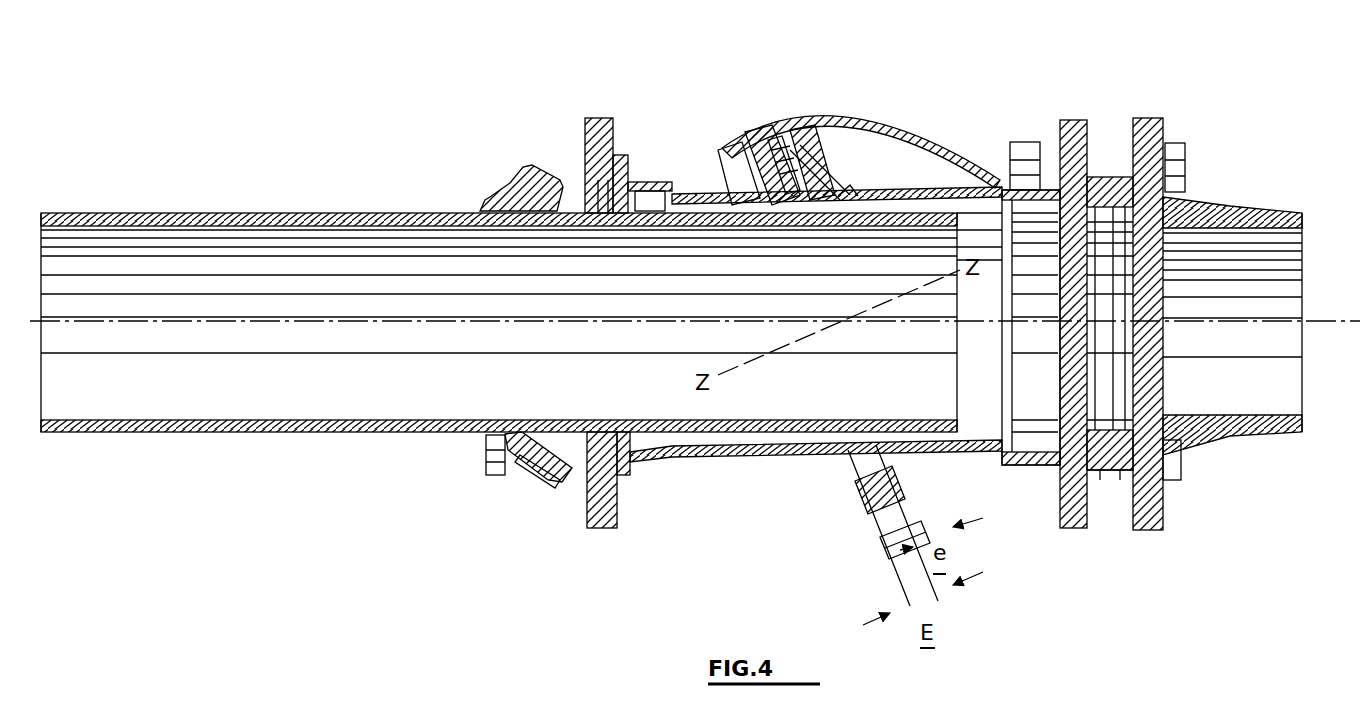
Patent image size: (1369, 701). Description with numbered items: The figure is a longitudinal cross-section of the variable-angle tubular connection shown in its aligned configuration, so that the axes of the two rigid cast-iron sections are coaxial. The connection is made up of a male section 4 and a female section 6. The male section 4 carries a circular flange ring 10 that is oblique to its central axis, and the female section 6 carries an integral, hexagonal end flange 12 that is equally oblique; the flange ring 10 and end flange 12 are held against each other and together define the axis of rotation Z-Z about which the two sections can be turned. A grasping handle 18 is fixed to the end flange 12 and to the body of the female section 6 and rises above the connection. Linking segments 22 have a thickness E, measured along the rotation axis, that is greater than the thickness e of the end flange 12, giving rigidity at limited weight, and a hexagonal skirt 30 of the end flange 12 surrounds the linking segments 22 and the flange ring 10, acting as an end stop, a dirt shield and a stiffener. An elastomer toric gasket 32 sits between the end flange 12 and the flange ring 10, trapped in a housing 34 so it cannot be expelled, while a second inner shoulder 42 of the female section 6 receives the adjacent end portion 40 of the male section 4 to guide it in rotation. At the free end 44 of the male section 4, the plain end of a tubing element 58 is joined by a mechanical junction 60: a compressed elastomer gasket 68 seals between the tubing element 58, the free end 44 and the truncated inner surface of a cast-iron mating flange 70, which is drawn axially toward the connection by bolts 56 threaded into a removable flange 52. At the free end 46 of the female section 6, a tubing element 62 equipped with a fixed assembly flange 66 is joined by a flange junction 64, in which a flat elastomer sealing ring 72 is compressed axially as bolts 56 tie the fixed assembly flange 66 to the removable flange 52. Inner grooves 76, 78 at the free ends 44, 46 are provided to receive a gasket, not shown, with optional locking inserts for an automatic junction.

The male section 4 is at (757, 460).
The female section 6 is at (937, 196).
The flange ring 10 is at (740, 147).
The end flange 12 is at (772, 132).
The grasping handle 18 is at (862, 115).
The linking segments 22 is at (855, 495).
The hexagonal skirt 30 is at (880, 546).
The toric gasket 32 is at (755, 128).
The housing 34 is at (818, 128).
The end portion 40 is at (822, 190).
The second inner shoulder 42 is at (848, 200).
The free end 44 is at (575, 178).
The free end 46 is at (1100, 480).
The removable flange 52 is at (605, 530).
The bolts 56 is at (1185, 165).
The tubing element 58 is at (286, 213).
The mechanical junction 60 is at (505, 160).
The tubing element 62 is at (1222, 216).
The flange junction 64 is at (1108, 130).
The fixed assembly flange 66 is at (1165, 130).
The gasket 68 is at (530, 432).
The mating flange 70 is at (548, 480).
The flat sealing ring 72 is at (1168, 485).
The inner groove 76 is at (605, 185).
The inner groove 78 is at (1057, 435).